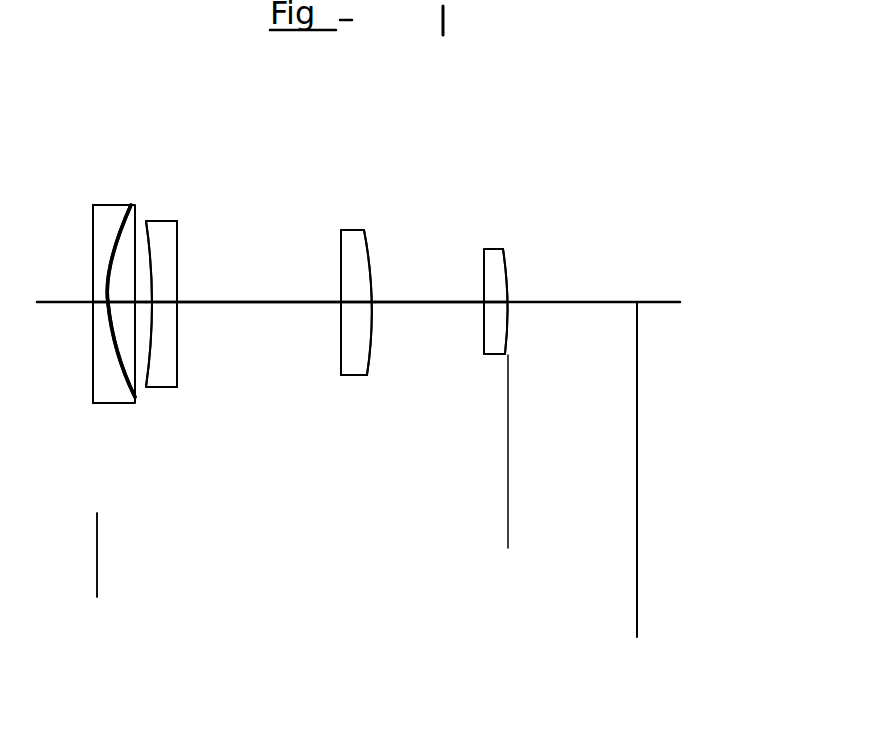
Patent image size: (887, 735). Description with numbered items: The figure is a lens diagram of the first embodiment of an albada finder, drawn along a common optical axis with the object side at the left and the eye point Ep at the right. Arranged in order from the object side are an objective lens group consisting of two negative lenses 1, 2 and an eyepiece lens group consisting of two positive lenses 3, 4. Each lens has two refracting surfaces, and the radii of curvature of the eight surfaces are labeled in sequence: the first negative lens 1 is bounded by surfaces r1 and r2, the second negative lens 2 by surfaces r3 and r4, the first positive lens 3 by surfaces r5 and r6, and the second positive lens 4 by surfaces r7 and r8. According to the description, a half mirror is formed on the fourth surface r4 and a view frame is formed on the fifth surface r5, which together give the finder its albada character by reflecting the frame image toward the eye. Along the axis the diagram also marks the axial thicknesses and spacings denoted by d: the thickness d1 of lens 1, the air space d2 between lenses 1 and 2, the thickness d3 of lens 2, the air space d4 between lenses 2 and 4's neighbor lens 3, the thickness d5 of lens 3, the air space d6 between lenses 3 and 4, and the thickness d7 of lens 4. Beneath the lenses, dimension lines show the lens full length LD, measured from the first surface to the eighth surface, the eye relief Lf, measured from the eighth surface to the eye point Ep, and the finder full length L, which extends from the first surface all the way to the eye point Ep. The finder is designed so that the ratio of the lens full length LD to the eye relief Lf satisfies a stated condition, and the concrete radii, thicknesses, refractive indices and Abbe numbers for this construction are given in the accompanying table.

The negative lens 1 is at (102, 253).
The negative lens 2 is at (165, 255).
The positive lens 3 is at (360, 273).
The positive lens 4 is at (500, 280).
The radius of curvature of first surface r1 is at (93, 205).
The radius of curvature of second surface r2 is at (131, 205).
The radius of curvature of third surface r3 is at (146, 221).
The radius of curvature of fourth surface r4 is at (177, 221).
The radius of curvature of fifth surface r5 is at (341, 230).
The radius of curvature of sixth surface r6 is at (364, 230).
The radius of curvature of seventh surface r7 is at (484, 249).
The radius of curvature of eighth surface r8 is at (503, 249).
The lens thickness d1 is at (100, 305).
The spatial distance d2 is at (134, 305).
The lens thickness d3 is at (167, 305).
The spatial distance d4 is at (261, 305).
The lens thickness d5 is at (357, 305).
The spatial distance d6 is at (425, 305).
The lens thickness d7 is at (493, 305).
The eye point Ep is at (637, 303).
The eye relief Lf is at (508, 498).
The lens full length LD is at (97, 528).
The finder full length L is at (97, 578).